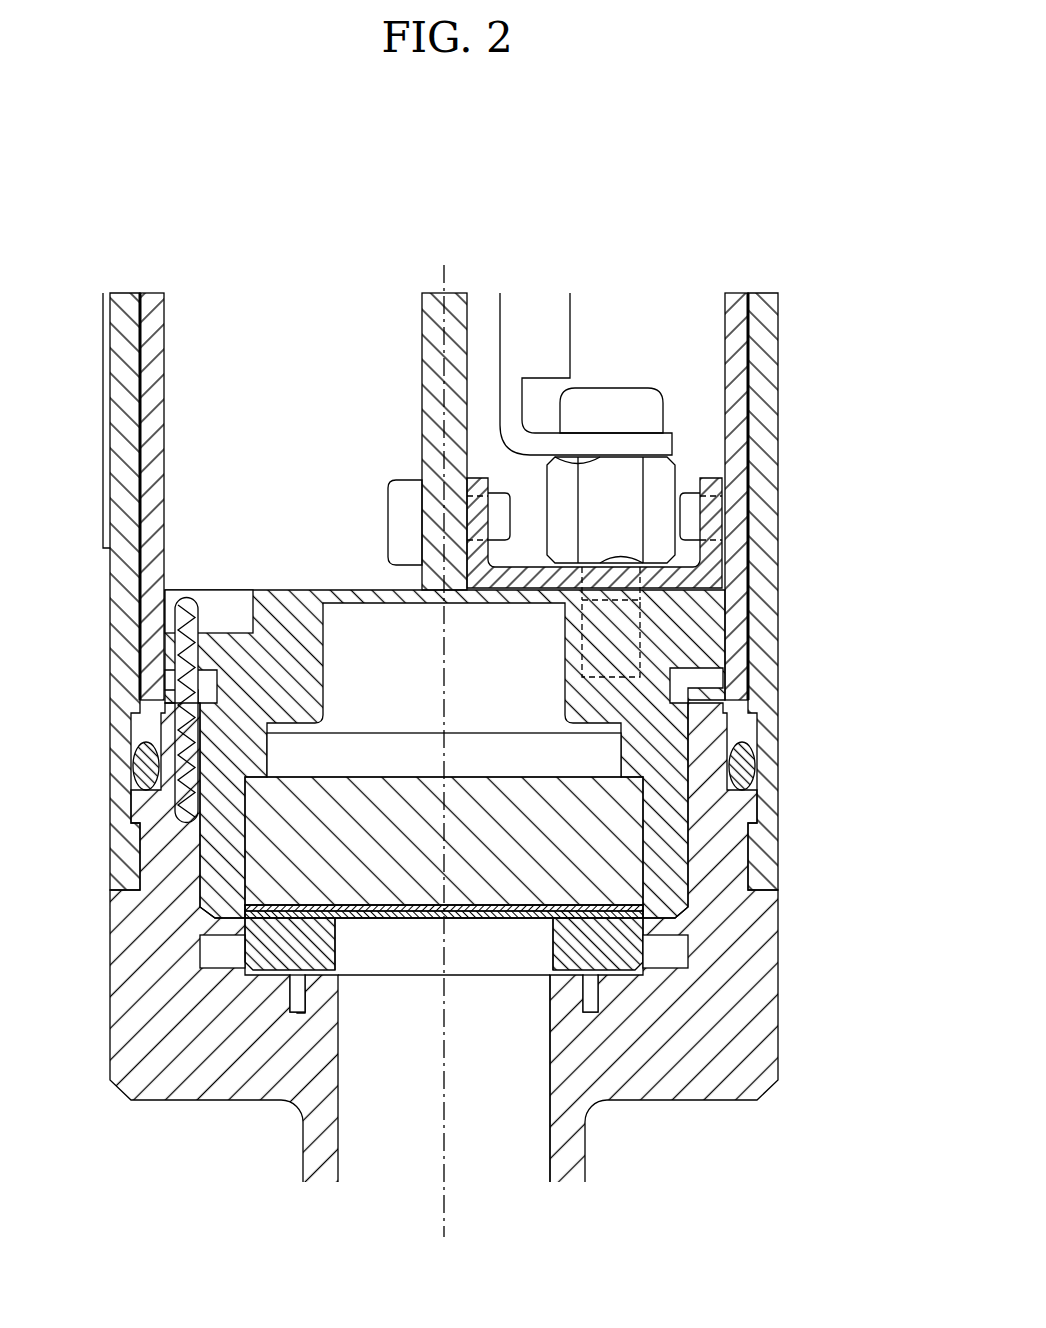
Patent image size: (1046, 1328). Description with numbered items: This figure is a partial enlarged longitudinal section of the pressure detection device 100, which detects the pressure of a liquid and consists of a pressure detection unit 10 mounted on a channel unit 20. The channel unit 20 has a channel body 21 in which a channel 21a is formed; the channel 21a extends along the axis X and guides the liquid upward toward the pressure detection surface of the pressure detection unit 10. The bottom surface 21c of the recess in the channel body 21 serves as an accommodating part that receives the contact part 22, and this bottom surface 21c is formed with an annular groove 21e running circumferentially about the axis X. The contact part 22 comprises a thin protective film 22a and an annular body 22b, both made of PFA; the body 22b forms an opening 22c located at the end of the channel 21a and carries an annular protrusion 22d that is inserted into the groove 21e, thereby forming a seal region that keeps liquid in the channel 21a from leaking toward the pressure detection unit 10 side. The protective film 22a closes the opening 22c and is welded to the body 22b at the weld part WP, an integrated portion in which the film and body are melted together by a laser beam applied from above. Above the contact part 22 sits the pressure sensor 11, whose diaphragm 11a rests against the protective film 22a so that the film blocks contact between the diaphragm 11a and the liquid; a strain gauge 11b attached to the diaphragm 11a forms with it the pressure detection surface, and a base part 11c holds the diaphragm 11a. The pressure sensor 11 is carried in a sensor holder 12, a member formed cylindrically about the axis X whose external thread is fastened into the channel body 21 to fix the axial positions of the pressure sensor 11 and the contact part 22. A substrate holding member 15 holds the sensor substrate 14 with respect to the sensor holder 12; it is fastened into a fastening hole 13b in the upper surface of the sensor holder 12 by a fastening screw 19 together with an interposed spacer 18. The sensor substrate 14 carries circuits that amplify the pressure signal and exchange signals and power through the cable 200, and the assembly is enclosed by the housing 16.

The pressure detection device 100 is at (782, 236).
The pressure detection unit 10 is at (219, 298).
The pressure sensor 11 is at (388, 777).
The diaphragm 11a is at (598, 905).
The strain gauge 11b is at (508, 905).
The base part 11c is at (498, 775).
The sensor holder 12 is at (727, 612).
The fastening hole 13b is at (580, 631).
The sensor substrate 14 is at (422, 428).
The substrate holding member 15 is at (705, 578).
The housing 16 is at (777, 400).
The spacer 18 is at (677, 470).
The fastening screw 19 is at (610, 390).
The channel unit 20 is at (780, 978).
The channel body 21 is at (778, 1040).
The channel 21a is at (560, 1145).
The bottom surface 21c is at (213, 963).
The annular groove 21e is at (287, 997).
The contact part 22 is at (200, 952).
The protective film 22a is at (480, 919).
The body 22b is at (553, 950).
The opening 22c is at (337, 930).
The protrusion 22d is at (306, 992).
The cable 200 is at (572, 295).
The weld part WP is at (322, 918).
The axis X is at (444, 1218).